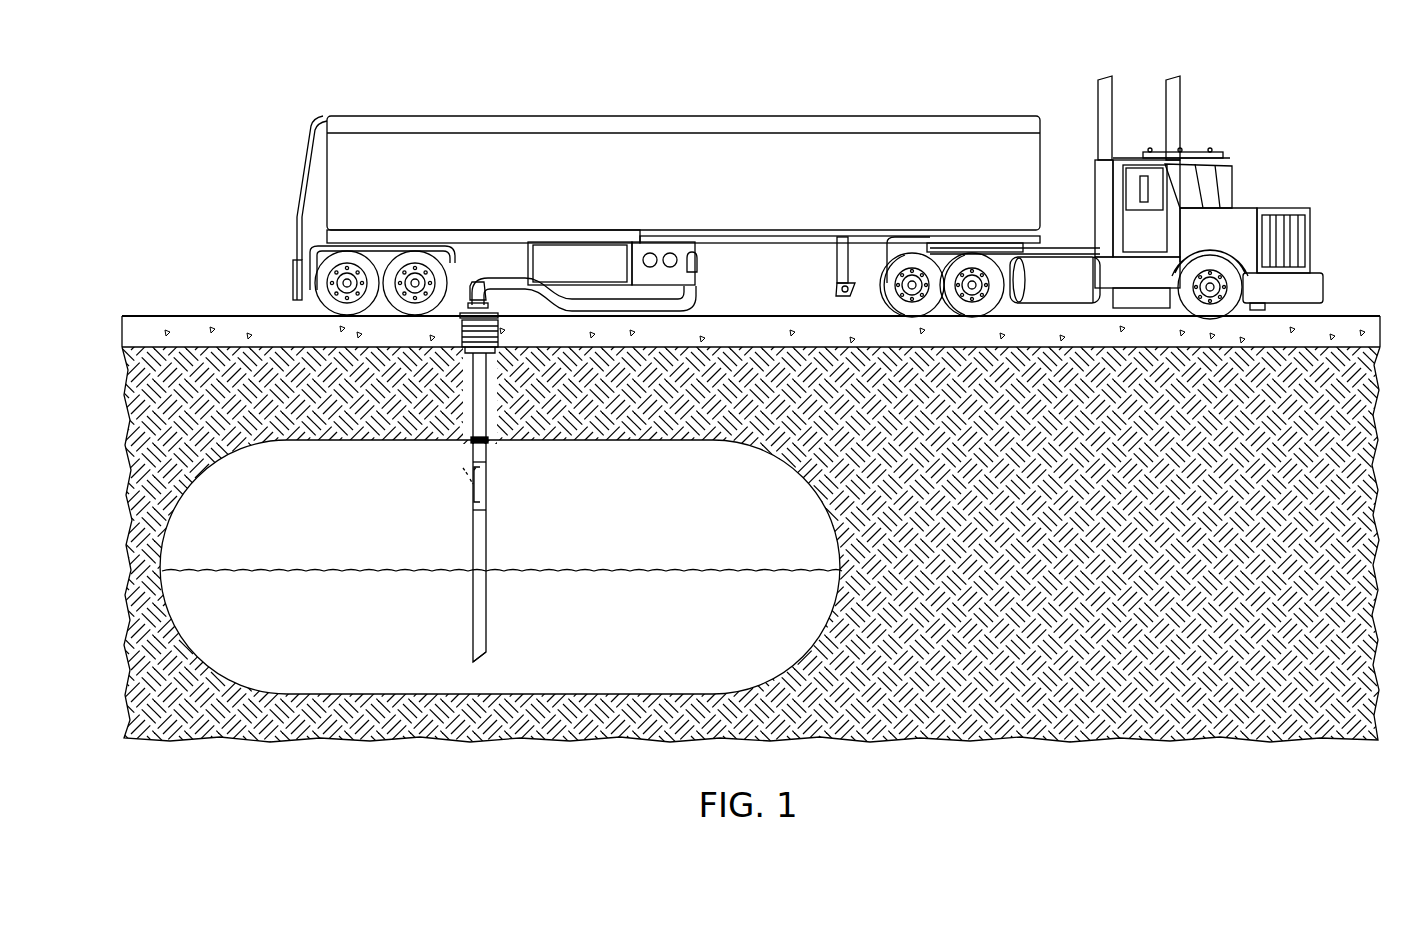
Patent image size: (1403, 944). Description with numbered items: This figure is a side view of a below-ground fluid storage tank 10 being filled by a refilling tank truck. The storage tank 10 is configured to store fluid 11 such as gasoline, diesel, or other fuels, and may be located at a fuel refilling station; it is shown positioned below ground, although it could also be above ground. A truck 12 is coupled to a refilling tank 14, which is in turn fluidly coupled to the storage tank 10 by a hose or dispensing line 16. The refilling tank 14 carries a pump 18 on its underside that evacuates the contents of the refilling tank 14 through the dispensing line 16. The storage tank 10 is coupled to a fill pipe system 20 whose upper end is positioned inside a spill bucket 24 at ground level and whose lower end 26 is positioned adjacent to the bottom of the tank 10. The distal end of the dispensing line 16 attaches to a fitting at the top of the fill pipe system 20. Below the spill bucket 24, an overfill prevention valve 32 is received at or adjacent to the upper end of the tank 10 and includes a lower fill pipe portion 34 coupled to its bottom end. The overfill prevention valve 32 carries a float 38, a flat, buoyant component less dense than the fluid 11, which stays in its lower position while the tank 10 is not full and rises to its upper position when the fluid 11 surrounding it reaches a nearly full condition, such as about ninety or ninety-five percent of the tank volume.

The fluid storage tank 10 is at (836, 492).
The fluid 11 is at (806, 620).
The truck 12 is at (1238, 220).
The refilling tank 14 is at (848, 142).
The dispensing line 16 is at (640, 308).
The pump 18 is at (669, 279).
The fill pipe system 20 is at (490, 447).
The spill bucket 24 is at (463, 341).
The lower end 26 is at (497, 660).
The overfill prevention valve 32 is at (491, 484).
The lower fill pipe portion 34 is at (486, 546).
The float 38 is at (470, 492).